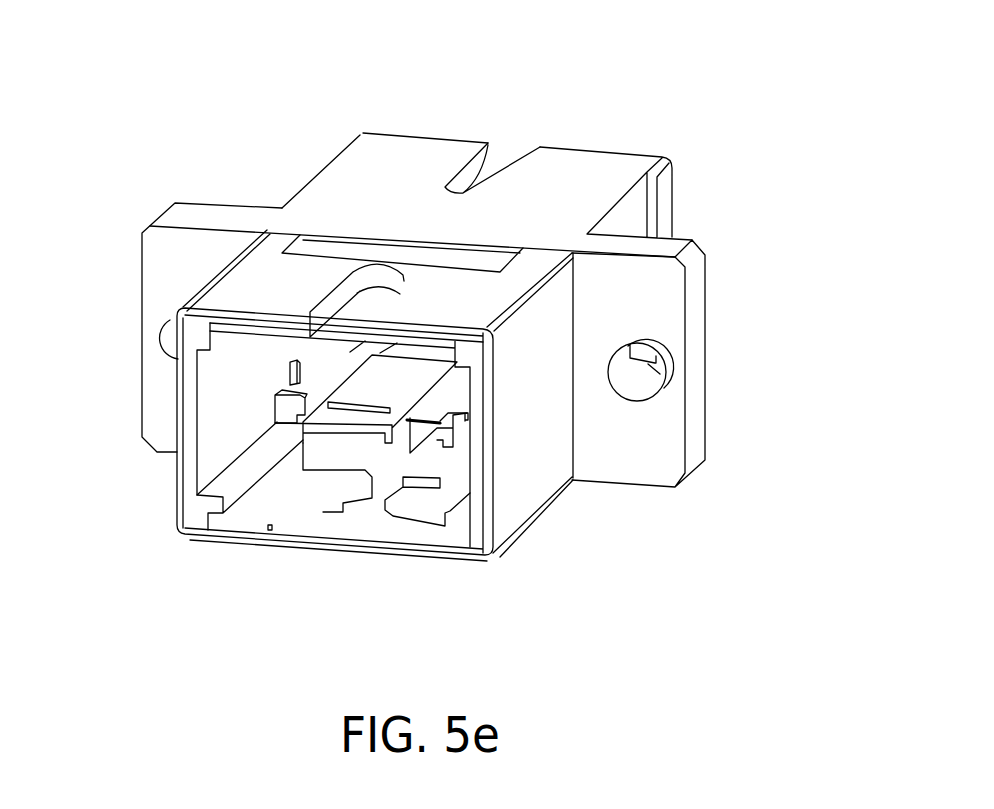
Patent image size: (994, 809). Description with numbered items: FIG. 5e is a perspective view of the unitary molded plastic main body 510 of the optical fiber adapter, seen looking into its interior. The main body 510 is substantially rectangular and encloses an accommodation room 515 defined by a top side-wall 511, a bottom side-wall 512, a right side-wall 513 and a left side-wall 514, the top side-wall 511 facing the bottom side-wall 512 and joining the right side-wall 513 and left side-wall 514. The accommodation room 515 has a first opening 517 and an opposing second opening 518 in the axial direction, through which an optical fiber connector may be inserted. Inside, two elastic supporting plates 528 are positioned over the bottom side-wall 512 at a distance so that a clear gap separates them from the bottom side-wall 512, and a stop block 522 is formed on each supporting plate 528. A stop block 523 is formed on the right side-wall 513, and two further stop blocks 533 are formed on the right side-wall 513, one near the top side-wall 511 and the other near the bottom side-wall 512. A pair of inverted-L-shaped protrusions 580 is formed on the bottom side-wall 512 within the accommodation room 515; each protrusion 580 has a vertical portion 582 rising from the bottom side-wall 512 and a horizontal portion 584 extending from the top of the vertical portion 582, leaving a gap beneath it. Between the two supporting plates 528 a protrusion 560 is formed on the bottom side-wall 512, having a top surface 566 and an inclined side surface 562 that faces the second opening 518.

The main body 510 is at (117, 163).
The top side-wall 511 is at (269, 281).
The bottom side-wall 512 is at (297, 543).
The right side-wall 513 is at (187, 443).
The left side-wall 514 is at (477, 408).
The accommodation room 515 is at (423, 472).
The first opening 517 is at (522, 142).
The second opening 518 is at (373, 388).
The stop block 522 is at (337, 427).
The stop block 523 is at (291, 380).
The elastic supporting plate 528 is at (368, 430).
The stop block 533 is at (270, 523).
The protrusion 560 is at (420, 430).
The inclined side surface 562 is at (420, 430).
The top surface 566 is at (408, 418).
The protrusion 580 is at (228, 522).
The vertical portion 582 is at (290, 413).
The horizontal portion 584 is at (277, 522).